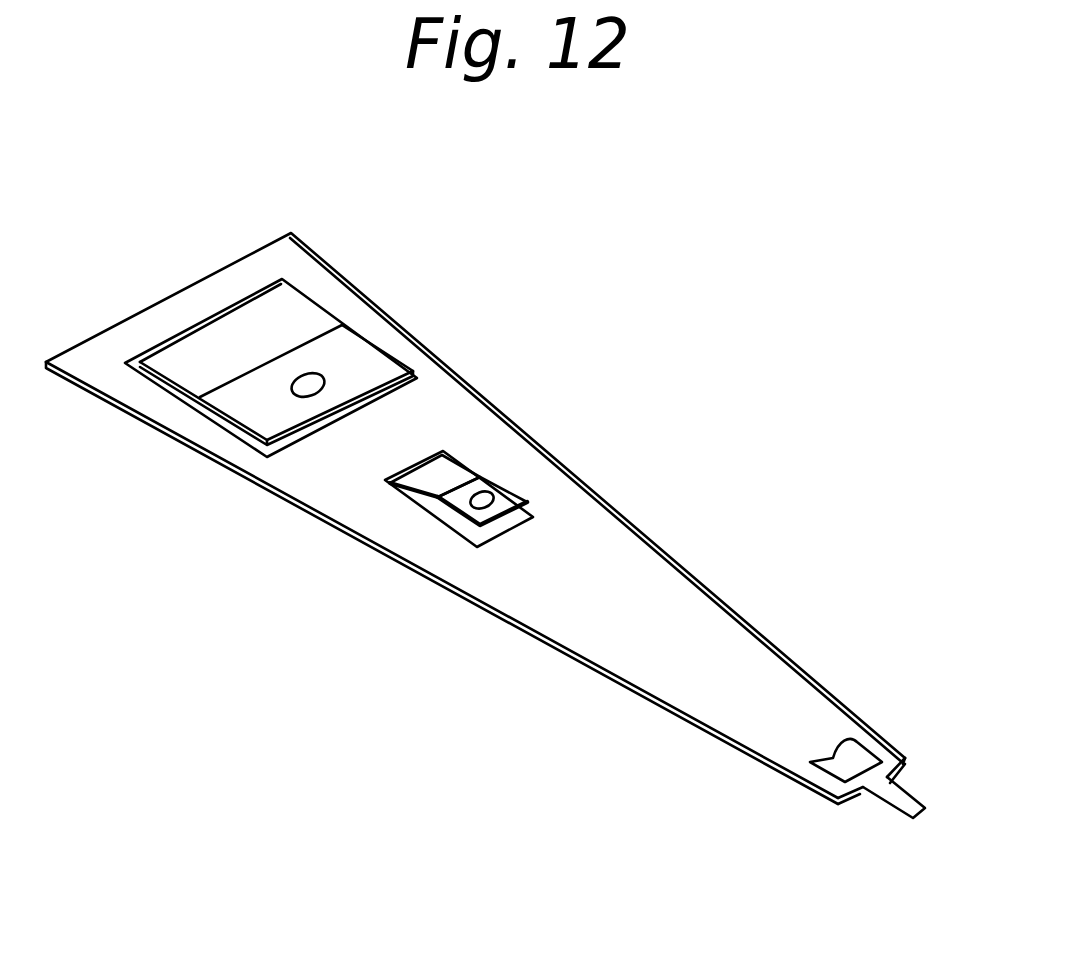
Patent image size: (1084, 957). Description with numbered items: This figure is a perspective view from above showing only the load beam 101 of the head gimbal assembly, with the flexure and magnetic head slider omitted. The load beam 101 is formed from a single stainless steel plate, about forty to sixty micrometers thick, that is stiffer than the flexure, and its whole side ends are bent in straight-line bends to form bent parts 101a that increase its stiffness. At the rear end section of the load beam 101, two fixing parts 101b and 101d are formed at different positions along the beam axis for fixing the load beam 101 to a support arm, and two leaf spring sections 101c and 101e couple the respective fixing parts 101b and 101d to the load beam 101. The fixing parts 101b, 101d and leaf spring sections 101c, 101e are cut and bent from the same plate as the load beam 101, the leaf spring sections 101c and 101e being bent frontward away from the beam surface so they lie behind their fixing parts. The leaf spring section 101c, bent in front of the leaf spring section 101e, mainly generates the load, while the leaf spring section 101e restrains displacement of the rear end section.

The load beam 101 is at (745, 658).
The bent parts 101a is at (692, 572).
The fixing part 101b is at (505, 492).
The leaf spring section 101c is at (460, 467).
The fixing part 101d is at (372, 363).
The leaf spring section 101e is at (293, 318).